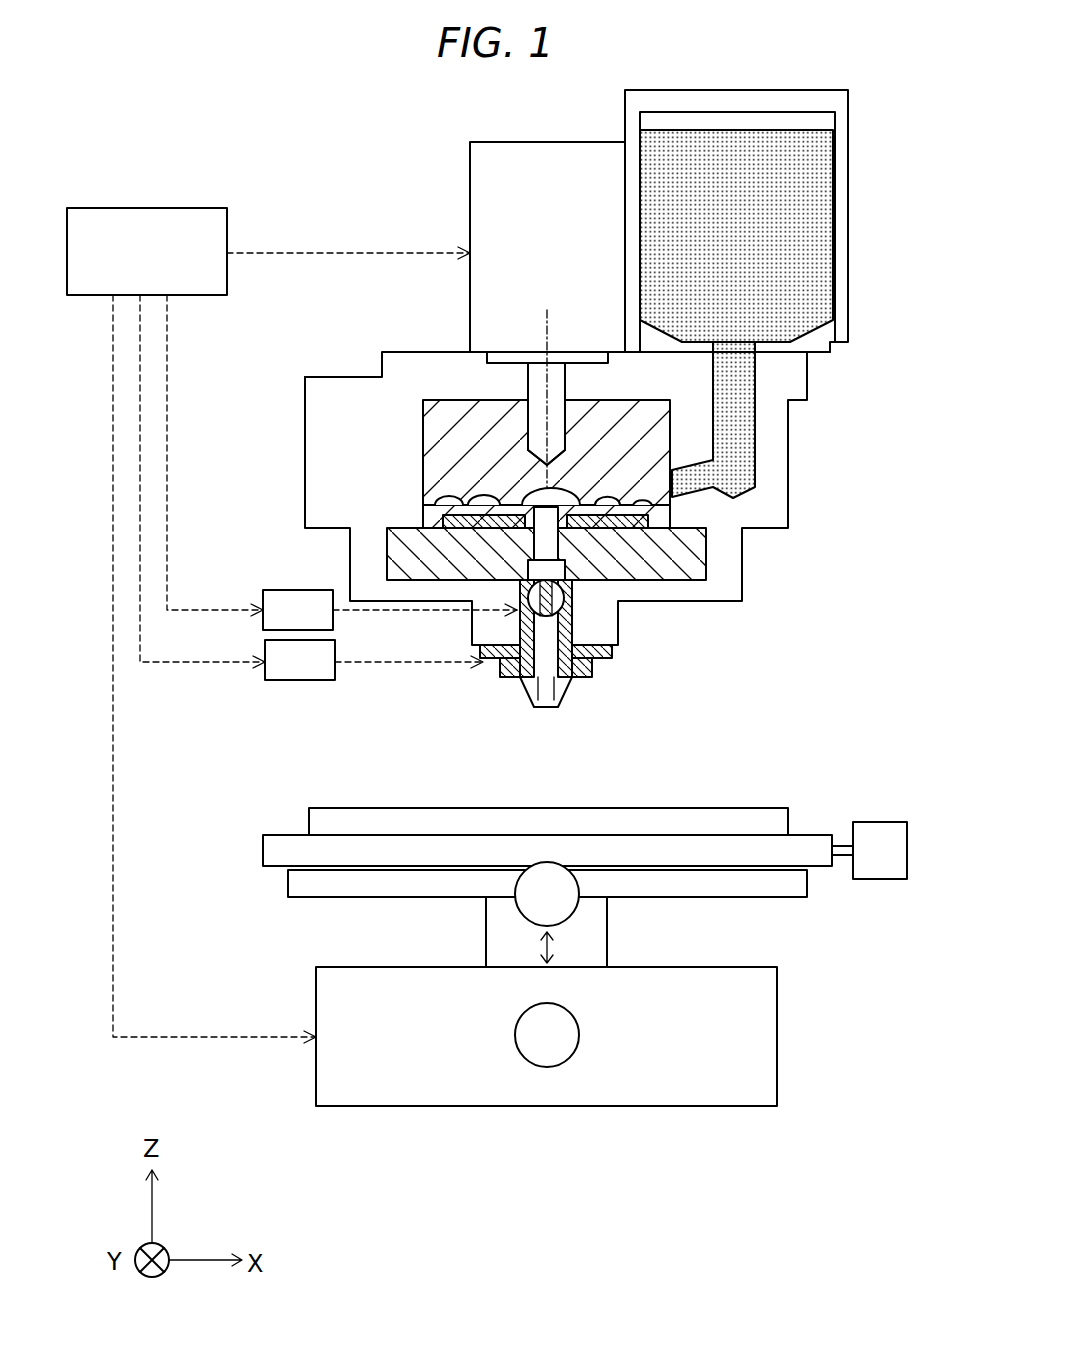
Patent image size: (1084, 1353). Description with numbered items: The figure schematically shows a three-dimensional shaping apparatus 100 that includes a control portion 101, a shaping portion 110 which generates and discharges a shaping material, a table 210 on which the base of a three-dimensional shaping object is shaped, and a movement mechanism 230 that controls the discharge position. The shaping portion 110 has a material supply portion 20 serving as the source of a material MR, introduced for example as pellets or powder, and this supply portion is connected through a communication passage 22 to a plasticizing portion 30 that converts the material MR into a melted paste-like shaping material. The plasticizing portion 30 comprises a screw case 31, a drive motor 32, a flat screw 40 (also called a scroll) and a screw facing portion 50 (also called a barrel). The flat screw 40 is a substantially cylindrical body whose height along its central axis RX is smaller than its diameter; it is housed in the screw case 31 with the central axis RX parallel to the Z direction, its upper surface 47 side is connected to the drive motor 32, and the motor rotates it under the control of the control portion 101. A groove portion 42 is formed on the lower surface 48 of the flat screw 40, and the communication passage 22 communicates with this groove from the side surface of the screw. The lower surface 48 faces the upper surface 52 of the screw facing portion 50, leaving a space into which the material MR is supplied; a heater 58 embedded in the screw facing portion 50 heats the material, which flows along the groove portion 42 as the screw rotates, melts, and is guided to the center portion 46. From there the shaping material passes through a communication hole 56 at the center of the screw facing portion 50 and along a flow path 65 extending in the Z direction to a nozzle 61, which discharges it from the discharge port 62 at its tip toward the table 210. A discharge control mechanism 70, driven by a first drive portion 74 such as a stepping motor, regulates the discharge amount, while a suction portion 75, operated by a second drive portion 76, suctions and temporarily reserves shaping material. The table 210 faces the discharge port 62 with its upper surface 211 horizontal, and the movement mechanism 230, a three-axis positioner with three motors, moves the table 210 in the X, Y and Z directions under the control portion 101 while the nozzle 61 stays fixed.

The three-dimensional shaping apparatus 100 is at (200, 135).
The control portion 101 is at (143, 208).
The shaping portion 110 is at (408, 132).
The material supply portion 20 is at (781, 221).
The material MR is at (810, 182).
The communication passage 22 is at (735, 425).
The plasticizing portion 30 is at (358, 208).
The screw case 31 is at (432, 352).
The drive motor 32 is at (472, 177).
The central axis RX is at (547, 325).
The flat screw 40 is at (431, 424).
The groove portion 42 is at (463, 490).
The center portion 46 is at (500, 462).
The upper surface 47 is at (460, 400).
The lower surface 48 is at (435, 508).
The screw facing portion 50 is at (522, 522).
The upper surface 52 is at (432, 492).
The communication hole 56 is at (562, 548).
The heater 58 is at (578, 543).
The nozzle 61 is at (631, 657).
The discharge port 62 is at (543, 708).
The flow path 65 is at (550, 638).
The discharge control mechanism 70 is at (518, 622).
The first drive portion 74 is at (280, 588).
The suction portion 75 is at (510, 673).
The second drive portion 76 is at (280, 680).
The table 210 is at (585, 835).
The upper surface 211 is at (642, 809).
The movement mechanism 230 is at (830, 949).